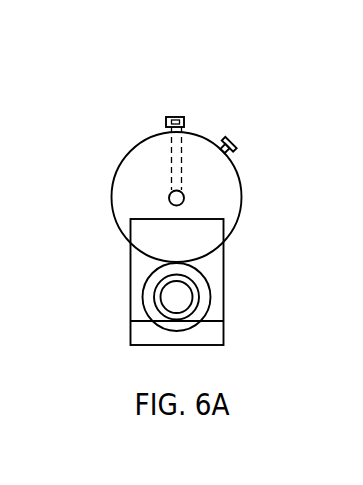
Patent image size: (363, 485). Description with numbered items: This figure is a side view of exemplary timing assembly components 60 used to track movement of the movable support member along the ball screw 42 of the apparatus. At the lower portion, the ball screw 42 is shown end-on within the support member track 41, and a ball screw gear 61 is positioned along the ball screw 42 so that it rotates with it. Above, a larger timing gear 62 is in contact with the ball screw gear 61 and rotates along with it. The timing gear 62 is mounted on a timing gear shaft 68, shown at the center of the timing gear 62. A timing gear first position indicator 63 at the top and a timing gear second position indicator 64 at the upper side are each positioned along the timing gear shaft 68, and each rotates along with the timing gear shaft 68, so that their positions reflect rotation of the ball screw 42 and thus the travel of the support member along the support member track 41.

The timing assembly components 60 is at (111, 110).
The timing gear 62 is at (231, 197).
The timing gear shaft 68 is at (169, 197).
The timing gear first position indicator 63 is at (177, 117).
The timing gear second position indicator 64 is at (228, 137).
The support member track 41 is at (224, 310).
The ball screw gear 61 is at (208, 288).
The ball screw 42 is at (167, 297).